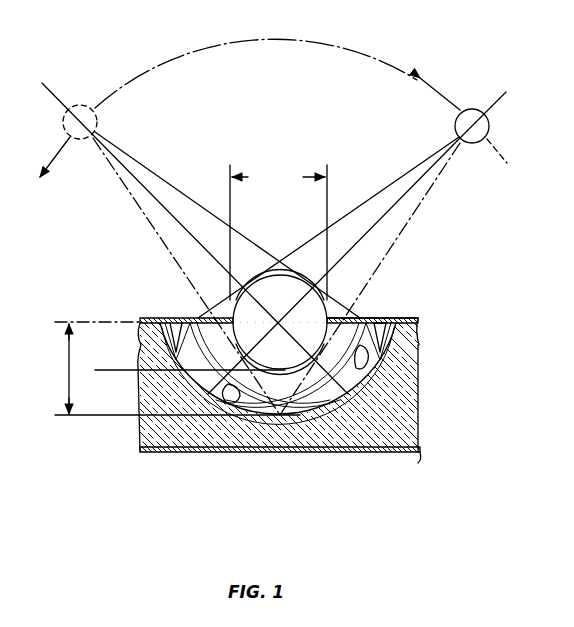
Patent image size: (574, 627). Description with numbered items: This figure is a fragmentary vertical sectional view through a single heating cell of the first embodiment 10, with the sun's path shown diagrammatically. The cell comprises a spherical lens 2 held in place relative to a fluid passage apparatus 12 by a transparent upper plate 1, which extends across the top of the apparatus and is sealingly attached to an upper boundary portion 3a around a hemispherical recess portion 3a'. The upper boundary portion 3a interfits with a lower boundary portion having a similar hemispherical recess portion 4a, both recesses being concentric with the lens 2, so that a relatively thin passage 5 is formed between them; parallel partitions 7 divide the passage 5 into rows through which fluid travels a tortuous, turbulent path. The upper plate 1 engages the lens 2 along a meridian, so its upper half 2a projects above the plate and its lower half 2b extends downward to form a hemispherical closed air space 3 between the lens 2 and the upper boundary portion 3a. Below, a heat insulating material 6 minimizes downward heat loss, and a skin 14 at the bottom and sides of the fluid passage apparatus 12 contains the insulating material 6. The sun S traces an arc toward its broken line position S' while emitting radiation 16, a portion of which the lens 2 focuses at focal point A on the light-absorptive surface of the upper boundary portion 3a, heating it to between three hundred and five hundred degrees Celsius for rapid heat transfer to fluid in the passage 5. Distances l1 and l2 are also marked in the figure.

The transparent upper plate 1 is at (347, 320).
The spherical lens 2 is at (326, 291).
The upper half 2a is at (230, 275).
The lower half 2b is at (265, 378).
The hemispherical closed air space 3 is at (262, 418).
The upper boundary portion 3a is at (265, 411).
The hemispherical recess portion 3a' is at (348, 365).
The hemispherical recess portion 4a is at (357, 397).
The passage 5 is at (210, 388).
The heat insulating material 6 is at (163, 448).
The partition 7 is at (395, 333).
The first embodiment 10 is at (443, 262).
The fluid passage apparatus 12 is at (429, 344).
The skin 14 is at (420, 463).
The radiation 16 is at (153, 193).
The sun S is at (301, 101).
The sun broken line position S' is at (68, 120).
The focal point A is at (240, 395).
The distance l1 is at (177, 368).
The distance l2 is at (278, 232).